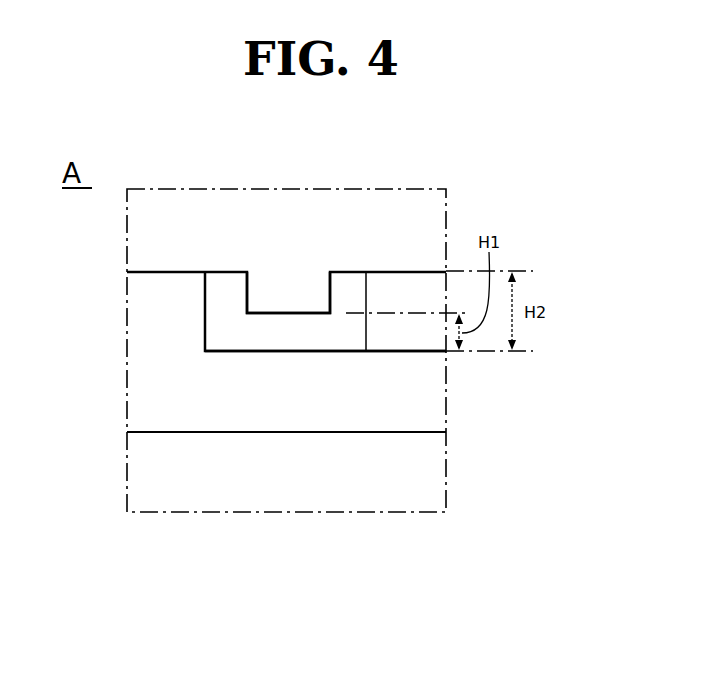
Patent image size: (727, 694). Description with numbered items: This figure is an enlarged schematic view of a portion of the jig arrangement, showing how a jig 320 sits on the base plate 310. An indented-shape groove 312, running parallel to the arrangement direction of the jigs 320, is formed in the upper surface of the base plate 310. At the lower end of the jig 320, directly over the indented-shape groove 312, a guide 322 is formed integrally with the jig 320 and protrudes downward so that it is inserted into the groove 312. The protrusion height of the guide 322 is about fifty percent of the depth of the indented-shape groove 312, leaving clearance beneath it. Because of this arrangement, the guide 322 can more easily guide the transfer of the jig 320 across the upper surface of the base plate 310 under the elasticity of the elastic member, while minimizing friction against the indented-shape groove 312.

The base plate 310 is at (309, 403).
The indented-shape groove 312 is at (236, 366).
The jig 320 is at (223, 212).
The guide 322 is at (234, 298).